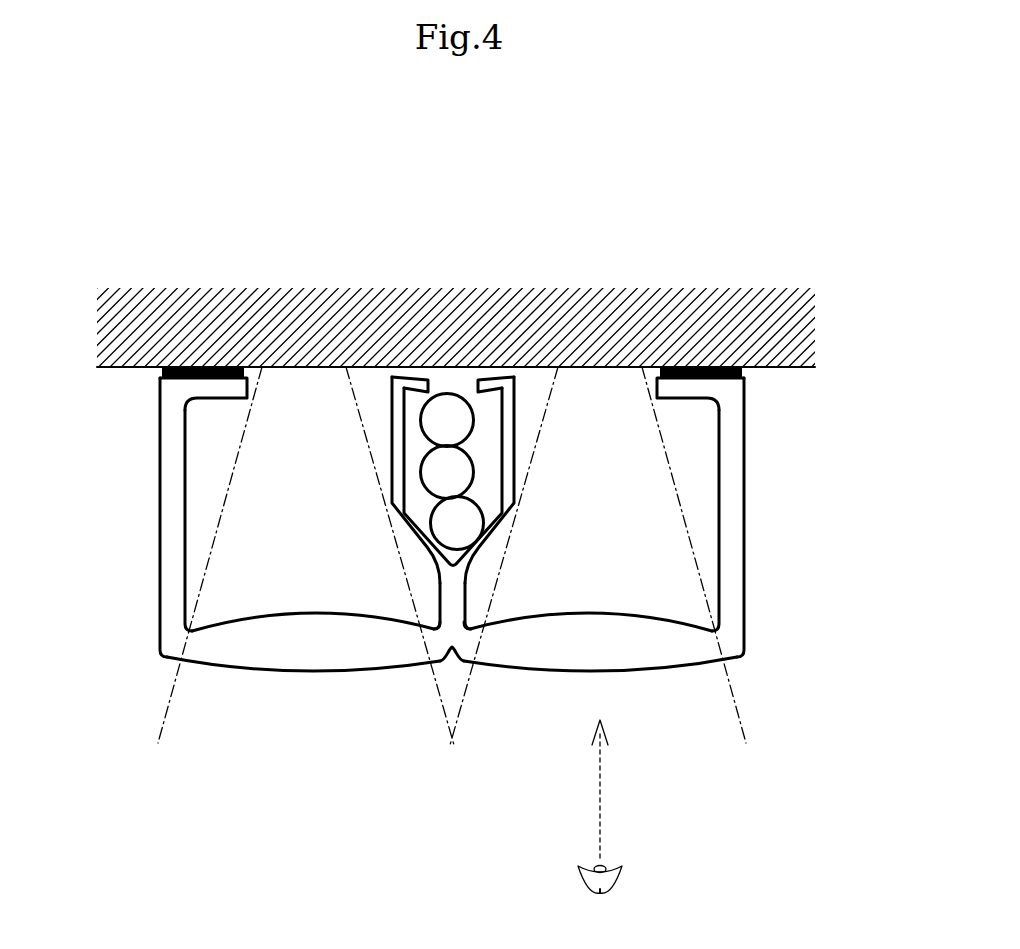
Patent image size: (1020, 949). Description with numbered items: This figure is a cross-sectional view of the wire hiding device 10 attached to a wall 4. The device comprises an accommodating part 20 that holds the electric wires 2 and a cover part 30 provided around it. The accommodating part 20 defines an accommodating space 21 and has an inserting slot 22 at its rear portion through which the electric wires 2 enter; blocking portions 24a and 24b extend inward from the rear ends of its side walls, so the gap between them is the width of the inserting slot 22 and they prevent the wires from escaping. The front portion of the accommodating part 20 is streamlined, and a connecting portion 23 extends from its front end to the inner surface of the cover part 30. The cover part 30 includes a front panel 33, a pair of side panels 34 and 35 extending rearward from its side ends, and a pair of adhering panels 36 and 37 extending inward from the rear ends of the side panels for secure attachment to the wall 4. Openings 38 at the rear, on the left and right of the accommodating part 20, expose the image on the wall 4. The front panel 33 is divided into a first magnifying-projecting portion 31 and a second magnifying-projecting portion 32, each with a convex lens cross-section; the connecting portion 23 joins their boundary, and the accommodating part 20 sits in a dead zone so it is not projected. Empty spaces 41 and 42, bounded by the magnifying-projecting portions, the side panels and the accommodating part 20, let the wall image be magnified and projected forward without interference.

The electric wires 2 is at (430, 472).
The wall 4 is at (787, 368).
The wire hiding device 10 is at (262, 713).
The accommodating part 20 is at (464, 427).
The accommodating space 21 is at (487, 495).
The inserting slot 22 is at (467, 388).
The connecting portion 23 is at (465, 595).
The blocking portion 24a is at (417, 385).
The blocking portion 24b is at (490, 385).
The cover part 30 is at (453, 594).
The first magnifying-projecting portion 31 is at (370, 652).
The second magnifying-projecting portion 32 is at (535, 652).
The front panel 33 is at (378, 772).
The side panel 34 is at (165, 502).
The side panel 35 is at (737, 502).
The adhering panel 36 is at (220, 392).
The adhering panel 37 is at (685, 392).
The openings 38 is at (608, 383).
The empty space 41 is at (247, 568).
The empty space 42 is at (655, 568).